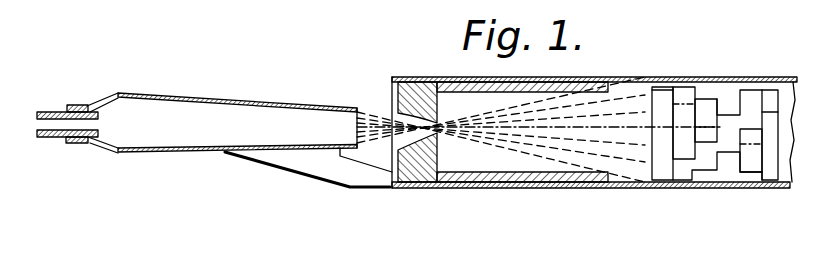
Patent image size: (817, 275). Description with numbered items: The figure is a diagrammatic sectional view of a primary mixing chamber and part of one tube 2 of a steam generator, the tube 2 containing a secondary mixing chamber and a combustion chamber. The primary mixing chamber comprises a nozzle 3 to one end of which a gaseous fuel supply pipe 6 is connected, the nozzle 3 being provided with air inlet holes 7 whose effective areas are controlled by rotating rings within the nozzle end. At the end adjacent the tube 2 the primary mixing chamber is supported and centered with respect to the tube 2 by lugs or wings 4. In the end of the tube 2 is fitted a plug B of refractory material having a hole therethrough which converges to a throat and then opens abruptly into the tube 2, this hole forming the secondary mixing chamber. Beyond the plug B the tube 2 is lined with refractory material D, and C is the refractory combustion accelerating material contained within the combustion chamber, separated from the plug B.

The gaseous fuel supply pipe 6 is at (46, 138).
The air inlet holes 7 is at (100, 152).
The primary mixing chamber nozzle 3 is at (237, 122).
The lugs or wings 4 is at (322, 172).
The refractory plug B is at (422, 182).
The refractory lining D is at (522, 182).
The tube 2 is at (679, 188).
The refractory combustion accelerating material C is at (752, 157).